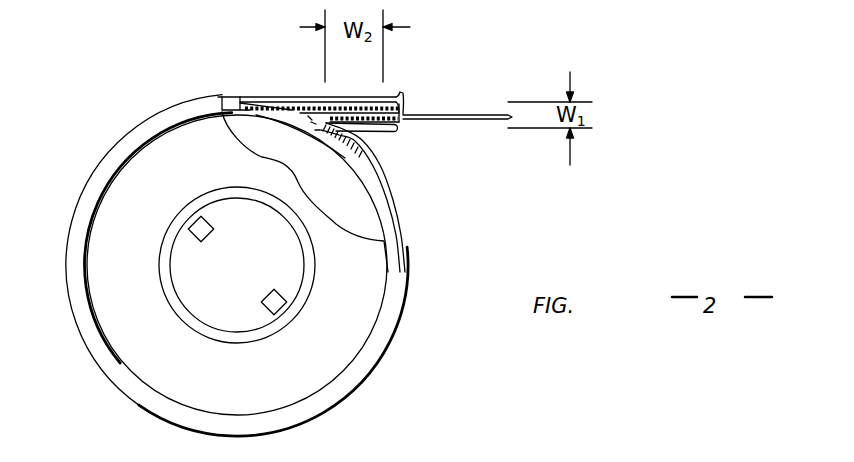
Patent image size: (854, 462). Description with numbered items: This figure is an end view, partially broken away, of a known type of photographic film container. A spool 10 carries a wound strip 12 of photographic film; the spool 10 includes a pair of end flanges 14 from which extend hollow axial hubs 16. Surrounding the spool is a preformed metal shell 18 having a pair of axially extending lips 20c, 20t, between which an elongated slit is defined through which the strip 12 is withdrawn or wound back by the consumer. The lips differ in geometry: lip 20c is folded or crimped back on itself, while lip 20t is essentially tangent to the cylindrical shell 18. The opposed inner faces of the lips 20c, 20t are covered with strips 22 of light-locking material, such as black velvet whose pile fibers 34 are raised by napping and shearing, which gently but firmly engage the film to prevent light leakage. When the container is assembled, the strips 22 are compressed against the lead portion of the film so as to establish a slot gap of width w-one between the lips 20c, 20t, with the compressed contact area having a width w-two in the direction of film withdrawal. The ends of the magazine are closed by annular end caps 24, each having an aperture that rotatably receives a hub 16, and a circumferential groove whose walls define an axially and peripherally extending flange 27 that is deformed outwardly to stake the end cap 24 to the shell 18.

The spool 10 is at (250, 279).
The strip of photographic film 12 is at (481, 113).
The end flange 14 is at (362, 220).
The hollow axial hub 16 is at (307, 270).
The preformed metal shell 18 is at (385, 92).
The lip 20t is at (315, 95).
The lip 20c is at (386, 140).
The strip of light-locking material 22 is at (398, 128).
The annular end cap 24 is at (345, 308).
The flange 27 is at (358, 372).
The pile fibers 34 is at (400, 110).